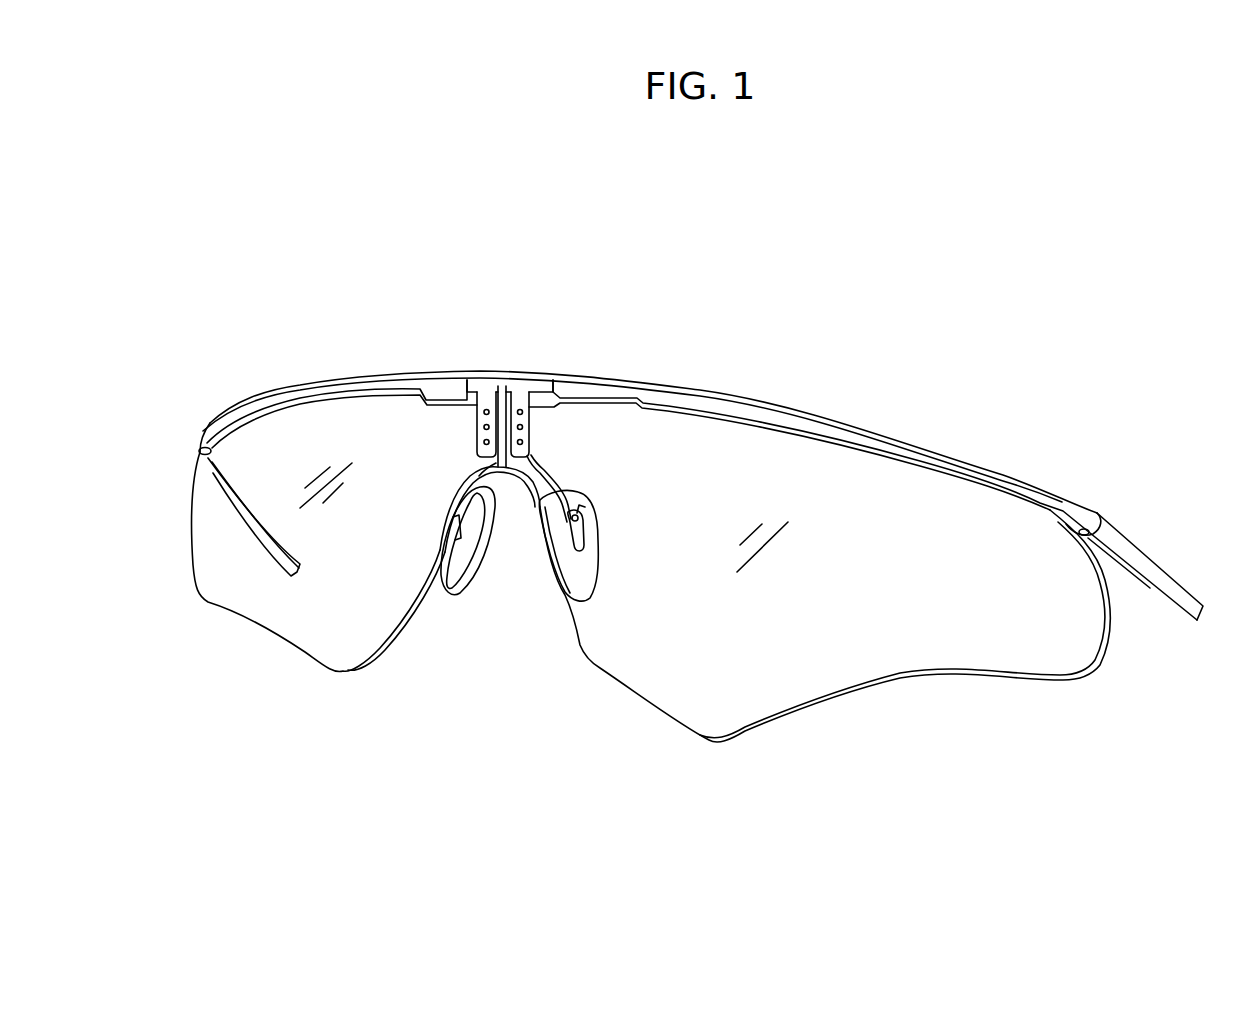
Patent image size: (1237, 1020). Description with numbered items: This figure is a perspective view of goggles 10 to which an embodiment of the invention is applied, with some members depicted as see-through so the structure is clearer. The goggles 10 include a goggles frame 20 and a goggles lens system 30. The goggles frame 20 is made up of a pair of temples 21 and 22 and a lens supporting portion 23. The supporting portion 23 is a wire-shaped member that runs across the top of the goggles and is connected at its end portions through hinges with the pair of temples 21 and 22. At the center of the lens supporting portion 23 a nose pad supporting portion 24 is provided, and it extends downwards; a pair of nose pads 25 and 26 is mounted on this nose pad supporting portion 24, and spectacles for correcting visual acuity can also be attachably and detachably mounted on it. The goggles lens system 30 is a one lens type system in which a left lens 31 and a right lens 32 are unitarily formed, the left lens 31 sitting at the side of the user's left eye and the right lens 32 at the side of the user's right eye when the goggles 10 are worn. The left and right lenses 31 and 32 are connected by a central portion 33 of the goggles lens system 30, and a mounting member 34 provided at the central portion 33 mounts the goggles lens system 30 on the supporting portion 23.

The goggles 10 is at (868, 317).
The goggles frame 20 is at (1058, 486).
The temple 21 is at (1142, 553).
The temple 22 is at (223, 497).
The lens supporting portion 23 is at (318, 381).
The nose pad supporting portion 24 is at (546, 433).
The nose pad 25 is at (550, 562).
The nose pad 26 is at (467, 590).
The goggles lens system 30 is at (743, 787).
The left lens 31 is at (915, 652).
The right lens 32 is at (293, 620).
The central portion 33 is at (518, 468).
The mounting member 34 is at (447, 372).